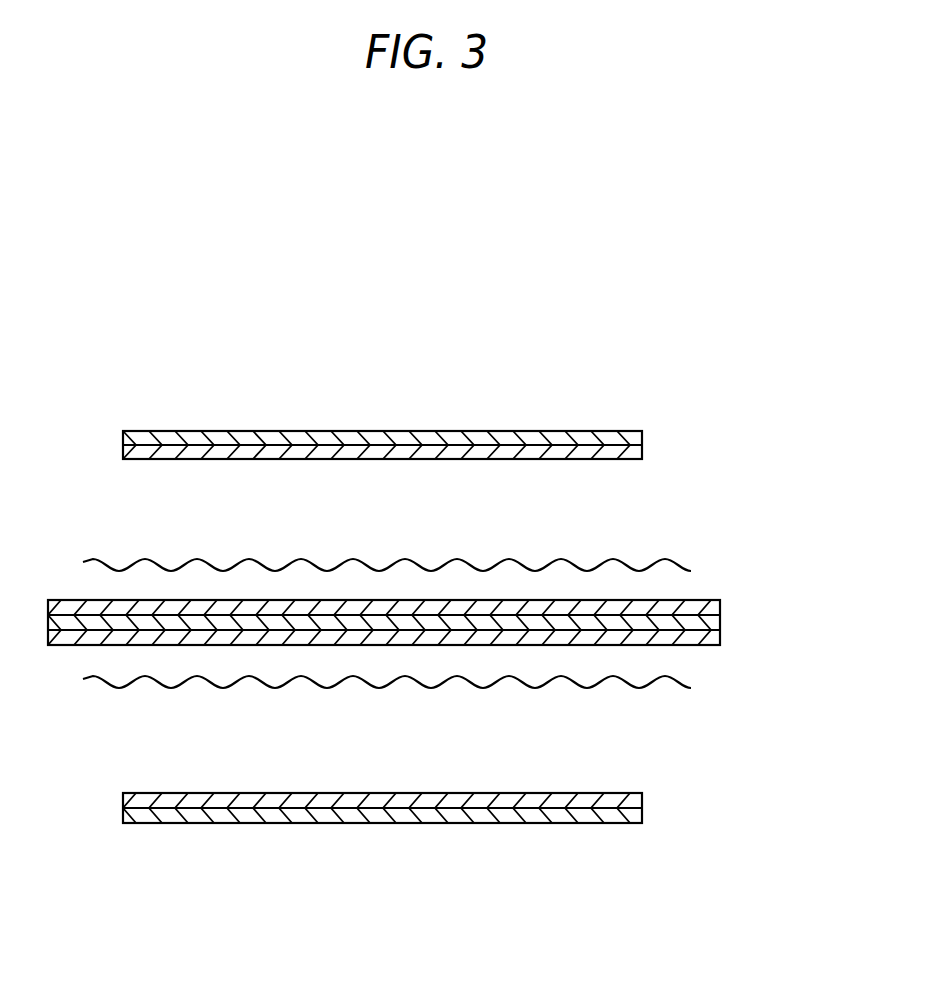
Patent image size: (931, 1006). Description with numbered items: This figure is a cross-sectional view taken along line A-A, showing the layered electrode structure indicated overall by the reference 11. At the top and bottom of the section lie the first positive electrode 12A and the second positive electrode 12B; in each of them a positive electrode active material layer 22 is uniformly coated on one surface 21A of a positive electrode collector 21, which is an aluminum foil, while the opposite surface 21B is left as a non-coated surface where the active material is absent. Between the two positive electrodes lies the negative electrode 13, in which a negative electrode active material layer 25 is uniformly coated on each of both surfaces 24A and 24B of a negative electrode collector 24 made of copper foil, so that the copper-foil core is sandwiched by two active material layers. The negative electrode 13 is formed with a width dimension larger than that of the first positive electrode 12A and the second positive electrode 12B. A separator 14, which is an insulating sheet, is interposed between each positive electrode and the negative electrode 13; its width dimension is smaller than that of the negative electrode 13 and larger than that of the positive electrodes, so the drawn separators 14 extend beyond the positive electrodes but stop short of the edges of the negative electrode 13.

The laminated glass / glazing assembly 11 is at (752, 424).
The first positive electrode 12A is at (380, 306).
The second positive electrode 12B is at (637, 915).
The negative electrode 13 is at (418, 742).
The separator 14 is at (124, 567).
The positive electrode collector 21 is at (281, 431).
The positive electrode active material layer 22 is at (362, 450).
The inner surface of glass layer 21A is at (470, 453).
The non-coated surface 21B is at (586, 431).
The negative electrode collector 24 is at (325, 622).
The negative electrode active material layer 25 is at (442, 612).
The surface of negative electrode collector 24A is at (695, 607).
The surface of negative electrode collector 24B is at (680, 640).